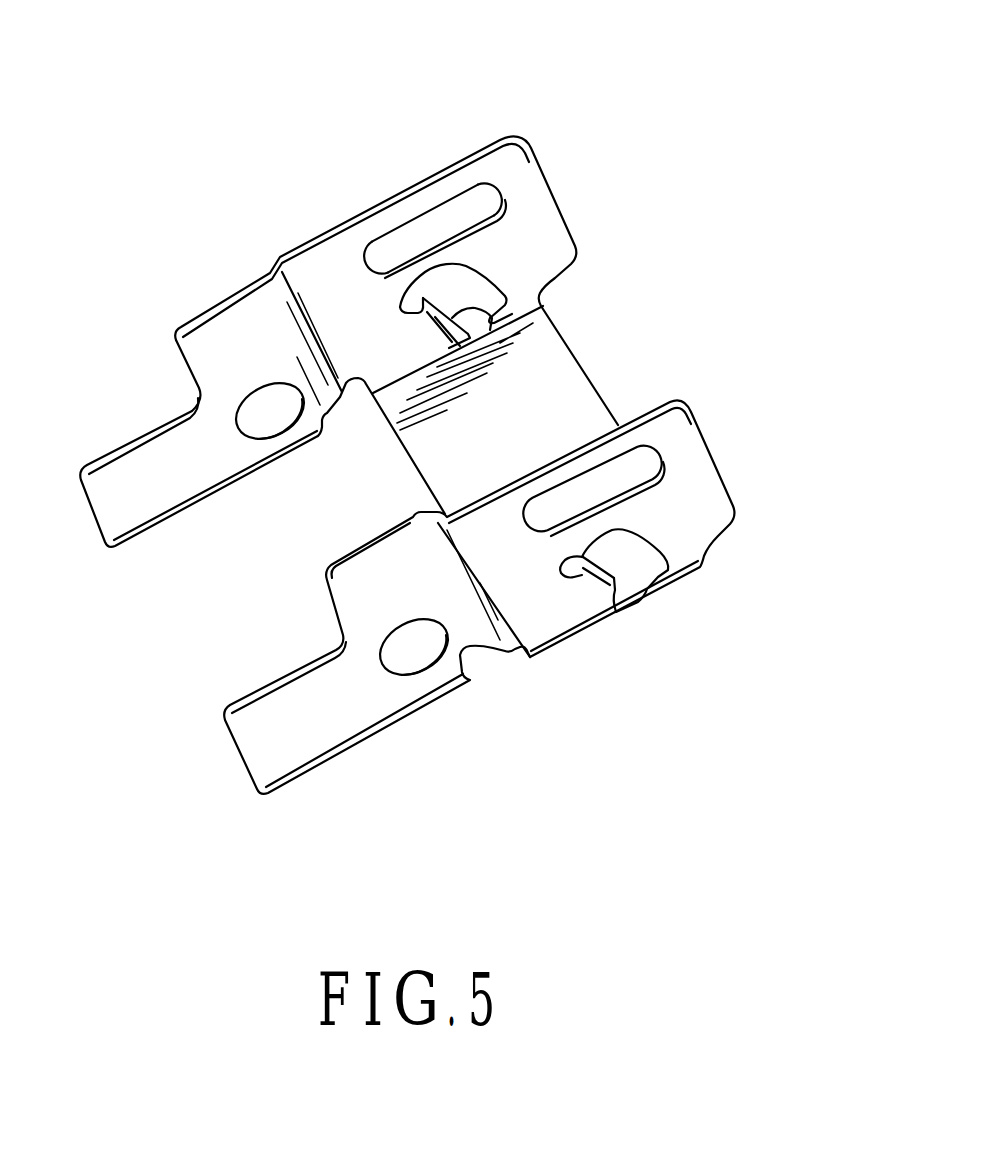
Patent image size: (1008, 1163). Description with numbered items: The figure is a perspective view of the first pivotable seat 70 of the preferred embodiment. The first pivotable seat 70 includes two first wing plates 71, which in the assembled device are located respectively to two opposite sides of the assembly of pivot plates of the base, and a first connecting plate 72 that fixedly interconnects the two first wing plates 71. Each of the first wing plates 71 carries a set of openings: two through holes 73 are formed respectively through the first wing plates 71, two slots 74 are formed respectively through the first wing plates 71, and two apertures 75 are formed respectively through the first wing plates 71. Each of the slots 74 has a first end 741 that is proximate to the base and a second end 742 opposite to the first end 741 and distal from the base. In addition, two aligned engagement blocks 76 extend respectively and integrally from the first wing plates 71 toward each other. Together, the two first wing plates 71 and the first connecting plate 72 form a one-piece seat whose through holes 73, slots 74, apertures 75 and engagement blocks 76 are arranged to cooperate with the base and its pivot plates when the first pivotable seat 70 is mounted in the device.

The first pivotable seat 70 is at (351, 770).
The first wing plates 71 is at (523, 164).
The first connecting plate 72 is at (577, 390).
The through holes 73 is at (268, 402).
The slots 74 is at (432, 213).
The first end 741 is at (360, 253).
The second end 742 is at (488, 183).
The apertures 75 is at (478, 283).
The engagement blocks 76 is at (518, 315).